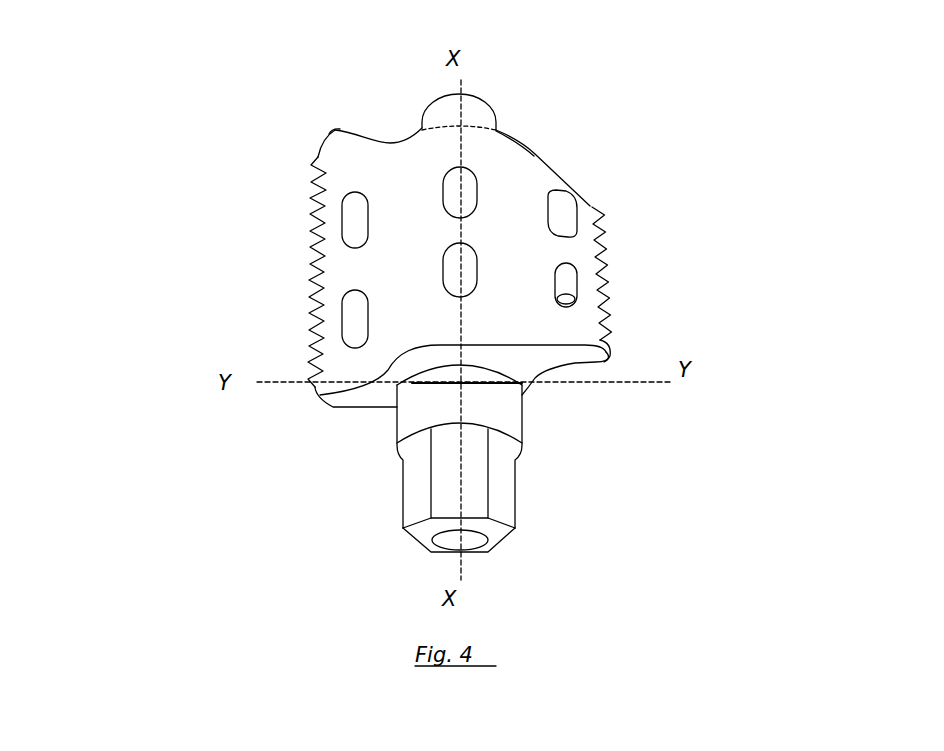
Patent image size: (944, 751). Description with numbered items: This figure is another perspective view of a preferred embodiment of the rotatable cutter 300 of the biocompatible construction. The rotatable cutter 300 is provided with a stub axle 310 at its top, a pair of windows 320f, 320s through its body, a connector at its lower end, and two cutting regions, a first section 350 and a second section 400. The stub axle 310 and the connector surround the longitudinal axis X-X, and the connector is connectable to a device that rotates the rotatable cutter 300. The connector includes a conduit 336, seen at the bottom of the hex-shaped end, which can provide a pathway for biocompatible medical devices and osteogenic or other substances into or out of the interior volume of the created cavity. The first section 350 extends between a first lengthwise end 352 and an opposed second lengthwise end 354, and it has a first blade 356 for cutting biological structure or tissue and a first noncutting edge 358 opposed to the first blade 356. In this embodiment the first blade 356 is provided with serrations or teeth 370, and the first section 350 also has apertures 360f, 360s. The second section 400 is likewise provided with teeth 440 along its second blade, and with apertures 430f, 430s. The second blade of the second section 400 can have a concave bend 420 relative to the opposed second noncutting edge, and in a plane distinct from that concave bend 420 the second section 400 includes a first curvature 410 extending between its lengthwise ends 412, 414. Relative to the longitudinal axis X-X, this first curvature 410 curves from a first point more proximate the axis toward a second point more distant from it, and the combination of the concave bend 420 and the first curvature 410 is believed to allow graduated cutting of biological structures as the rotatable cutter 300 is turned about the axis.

The rotatable cutter 300 is at (368, 108).
The stub axle 310 is at (485, 102).
The window 320f is at (476, 197).
The window 320s is at (442, 287).
The conduit 336 is at (440, 541).
The first section 350 is at (333, 250).
The first lengthwise end 352 is at (333, 128).
The second lengthwise end 354 is at (325, 404).
The first blade 356 is at (318, 156).
The first noncutting edge 358 is at (333, 297).
The aperture 360f is at (341, 199).
The aperture 360s is at (335, 330).
The teeth 370 is at (308, 213).
The second section 400 is at (540, 255).
The first curvature 410 is at (572, 327).
The lengthwise end 412 is at (513, 141).
The second lengthwise end 414 is at (607, 362).
The concave bend 420 is at (597, 232).
The aperture 430f is at (574, 214).
The aperture 430s is at (580, 287).
The teeth 440 is at (610, 315).